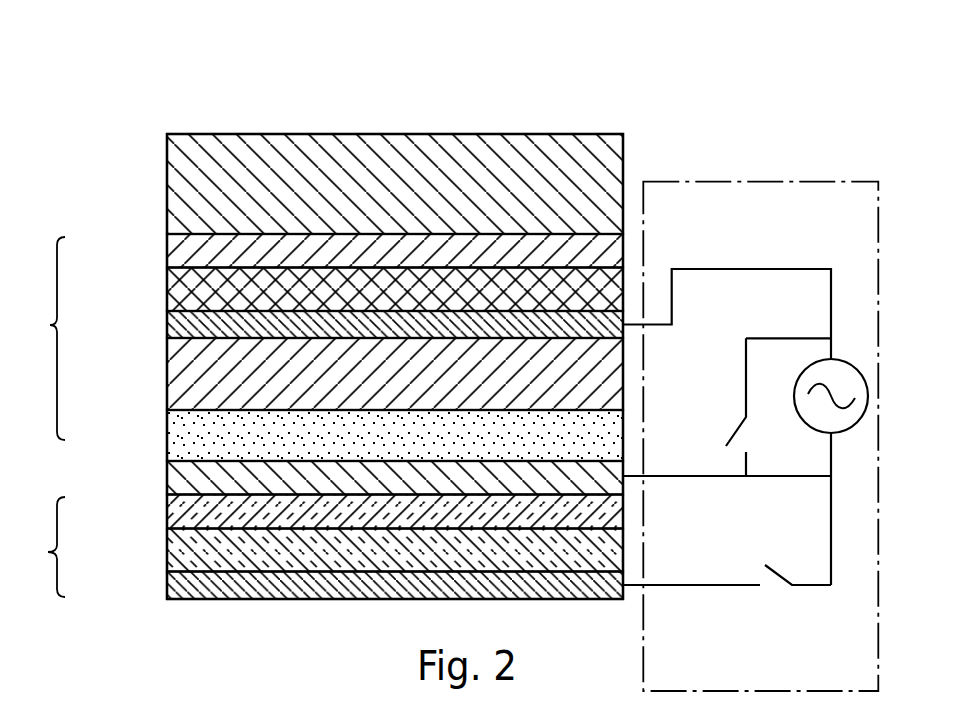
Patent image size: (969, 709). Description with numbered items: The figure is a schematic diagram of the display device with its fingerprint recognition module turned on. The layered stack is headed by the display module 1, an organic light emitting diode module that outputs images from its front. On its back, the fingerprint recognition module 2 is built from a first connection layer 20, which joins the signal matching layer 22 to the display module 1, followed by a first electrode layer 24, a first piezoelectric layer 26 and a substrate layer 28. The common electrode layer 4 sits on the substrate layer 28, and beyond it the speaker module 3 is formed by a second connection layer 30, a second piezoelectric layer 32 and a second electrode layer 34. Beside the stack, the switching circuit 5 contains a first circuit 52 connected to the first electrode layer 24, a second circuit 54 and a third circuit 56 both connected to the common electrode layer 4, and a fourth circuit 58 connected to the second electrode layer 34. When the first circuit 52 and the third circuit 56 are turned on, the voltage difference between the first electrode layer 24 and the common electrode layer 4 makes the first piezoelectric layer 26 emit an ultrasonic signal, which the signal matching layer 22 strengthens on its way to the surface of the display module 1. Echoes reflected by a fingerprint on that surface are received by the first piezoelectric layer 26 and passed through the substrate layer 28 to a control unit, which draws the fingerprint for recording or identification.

The display module 1 is at (568, 137).
The fingerprint recognition module 2 is at (45, 338).
The speaker module 3 is at (41, 547).
The common electrode layer 4 is at (167, 475).
The switching circuit 5 is at (760, 182).
The first connection layer 20 is at (167, 250).
The signal matching layer 22 is at (167, 288).
The first electrode layer 24 is at (167, 323).
The first piezoelectric layer 26 is at (167, 372).
The substrate layer 28 is at (167, 433).
The second connection layer 30 is at (167, 511).
The second piezoelectric layer 32 is at (167, 550).
The second electrode layer 34 is at (167, 588).
The first circuit 52 is at (712, 269).
The second circuit 54 is at (745, 375).
The third circuit 56 is at (783, 480).
The fourth circuit 58 is at (720, 586).